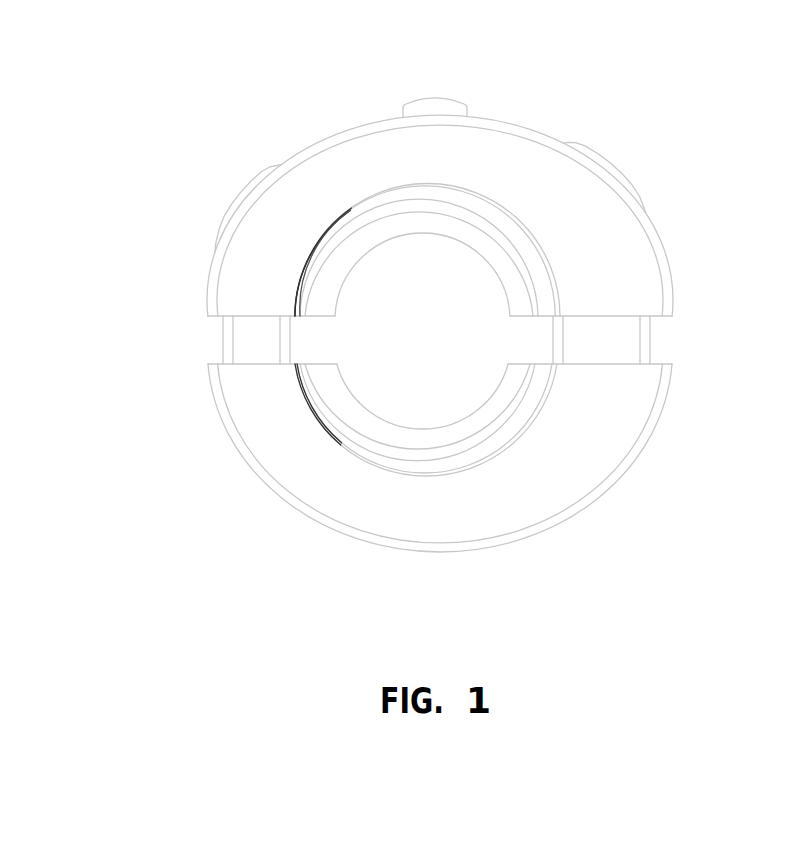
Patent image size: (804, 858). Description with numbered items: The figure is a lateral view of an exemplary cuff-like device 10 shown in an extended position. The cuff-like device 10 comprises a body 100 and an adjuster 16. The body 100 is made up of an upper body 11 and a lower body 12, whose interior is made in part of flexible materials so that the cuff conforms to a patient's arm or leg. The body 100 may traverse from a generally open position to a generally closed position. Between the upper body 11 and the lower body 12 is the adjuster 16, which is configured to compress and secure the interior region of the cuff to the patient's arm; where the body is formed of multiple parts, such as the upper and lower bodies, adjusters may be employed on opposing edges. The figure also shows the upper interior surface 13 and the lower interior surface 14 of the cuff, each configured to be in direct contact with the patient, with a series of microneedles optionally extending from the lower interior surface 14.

The body 100 is at (134, 52).
The cuff-like device 10 is at (508, 122).
The upper body 11 is at (221, 275).
The lower body 12 is at (216, 408).
The upper interior surface 13 is at (345, 253).
The lower interior surface 14 is at (356, 398).
The adjuster 16 is at (290, 340).